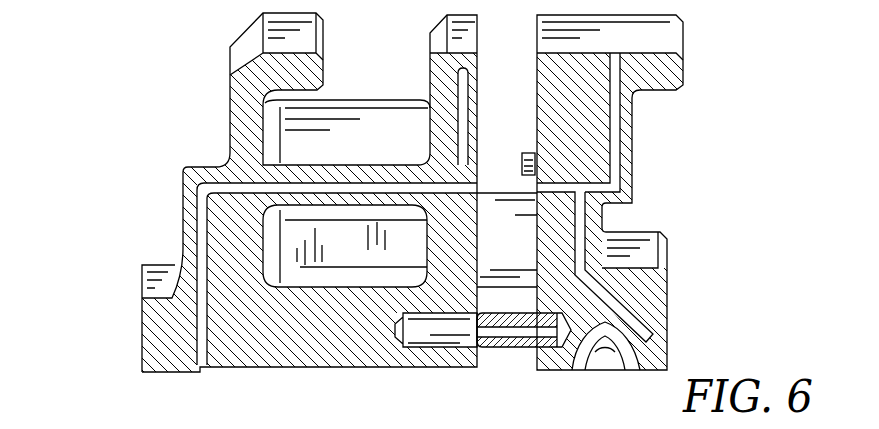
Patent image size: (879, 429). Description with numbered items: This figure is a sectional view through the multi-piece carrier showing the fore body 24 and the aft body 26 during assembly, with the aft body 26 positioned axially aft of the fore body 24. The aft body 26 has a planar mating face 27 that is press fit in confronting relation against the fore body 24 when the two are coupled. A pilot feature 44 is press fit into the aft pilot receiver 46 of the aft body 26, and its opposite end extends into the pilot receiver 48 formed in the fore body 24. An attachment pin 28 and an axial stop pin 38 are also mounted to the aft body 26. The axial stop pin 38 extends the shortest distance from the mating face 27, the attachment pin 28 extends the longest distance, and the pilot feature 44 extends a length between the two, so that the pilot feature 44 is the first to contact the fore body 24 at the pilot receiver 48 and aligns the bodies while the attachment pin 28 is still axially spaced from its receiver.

The fore body 24 is at (135, 195).
The aft body 26 is at (640, 147).
The mating face 27 is at (527, 428).
The attachment pin 28 is at (487, 176).
The axial stop pin 38 is at (524, 141).
The pilot feature 44 is at (510, 358).
The aft pilot receiver 46 is at (590, 323).
The pilot receiver 48 is at (422, 341).